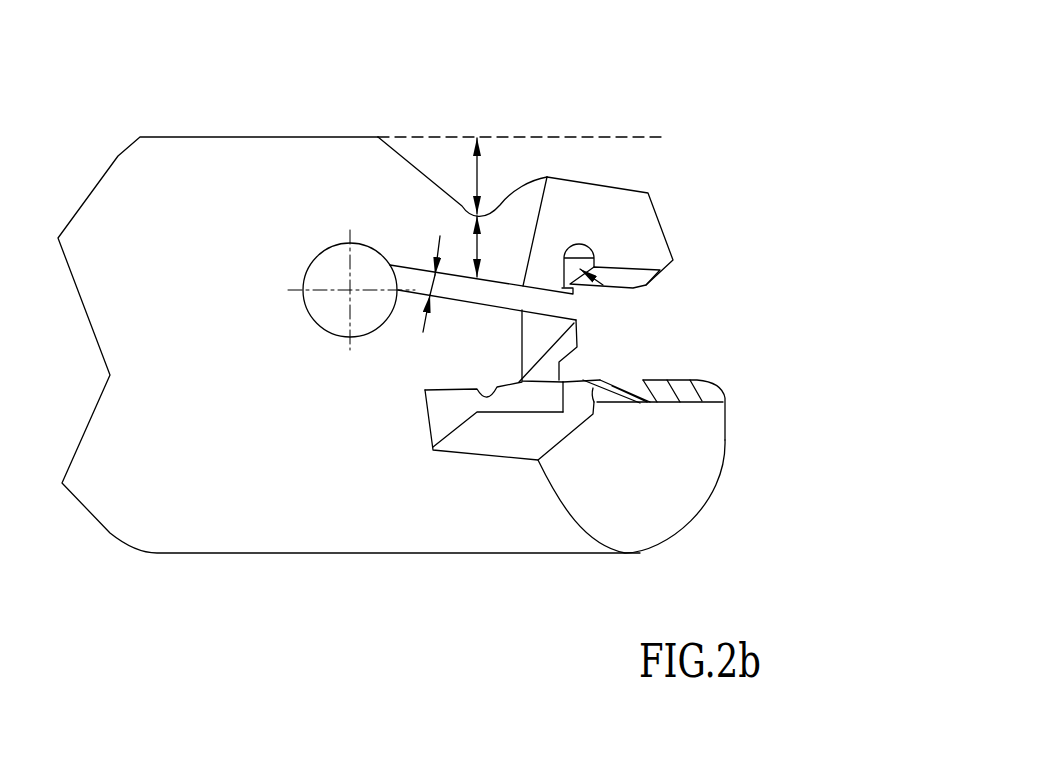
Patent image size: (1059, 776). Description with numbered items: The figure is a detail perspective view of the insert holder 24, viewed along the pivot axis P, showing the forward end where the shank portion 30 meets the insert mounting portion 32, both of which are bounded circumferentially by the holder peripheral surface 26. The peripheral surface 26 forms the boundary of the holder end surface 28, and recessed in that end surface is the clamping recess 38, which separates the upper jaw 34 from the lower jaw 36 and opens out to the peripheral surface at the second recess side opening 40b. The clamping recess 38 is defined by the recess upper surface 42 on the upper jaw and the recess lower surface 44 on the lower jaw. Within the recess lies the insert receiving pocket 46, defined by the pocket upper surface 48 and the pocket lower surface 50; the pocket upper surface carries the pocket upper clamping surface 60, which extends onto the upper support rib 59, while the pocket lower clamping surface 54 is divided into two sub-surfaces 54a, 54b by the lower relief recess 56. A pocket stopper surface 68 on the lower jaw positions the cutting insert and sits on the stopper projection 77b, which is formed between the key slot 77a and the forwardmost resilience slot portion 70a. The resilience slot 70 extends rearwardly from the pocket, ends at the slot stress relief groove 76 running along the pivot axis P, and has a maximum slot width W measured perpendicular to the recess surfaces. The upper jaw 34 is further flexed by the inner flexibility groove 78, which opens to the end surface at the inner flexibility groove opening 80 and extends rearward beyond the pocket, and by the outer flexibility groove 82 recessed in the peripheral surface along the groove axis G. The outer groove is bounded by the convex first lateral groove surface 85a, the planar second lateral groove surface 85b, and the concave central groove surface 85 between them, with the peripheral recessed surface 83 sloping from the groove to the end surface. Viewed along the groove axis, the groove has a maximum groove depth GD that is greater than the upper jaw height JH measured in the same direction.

The insert holder 24 is at (643, 63).
The holder peripheral surface 26 is at (227, 170).
The holder end surface 28 is at (644, 228).
The shank portion 30 is at (228, 522).
The insert mounting portion 32 is at (711, 531).
The upper jaw 34 is at (606, 204).
The lower jaw 36 is at (679, 478).
The clamping recess 38 is at (392, 272).
The second recess side opening 40b is at (462, 296).
The recess upper surface 42 is at (408, 292).
The recess lower surface 44 is at (459, 277).
The insert receiving pocket 46 is at (694, 343).
The pocket upper surface 48 is at (623, 278).
The pocket lower surface 50 is at (650, 395).
The pocket lower clamping surface 54 is at (703, 393).
The pocket lower clamping sub-surface 54a is at (642, 391).
The pocket lower clamping sub-surface 54b is at (593, 388).
The lower relief recess 56 is at (657, 404).
The upper support rib 59 is at (687, 242).
The pocket upper clamping surface 60 is at (637, 287).
The pocket stopper surface 68 is at (577, 330).
The resilience slot 70 is at (476, 295).
The forwardmost resilience slot portion 70a is at (556, 305).
The slot stress relief groove 76 is at (333, 273).
The key slot 77a is at (535, 438).
The stopper projection 77b is at (541, 339).
The inner flexibility groove 78 is at (603, 285).
The inner flexibility groove opening 80 is at (587, 248).
The outer flexibility groove 82 is at (475, 108).
The peripheral recessed surface 83 is at (593, 181).
The central groove surface 85 is at (492, 199).
The first lateral groove surface 85a is at (544, 173).
The second lateral groove surface 85b is at (409, 151).
The groove axis G is at (477, 178).
The maximum groove depth GD is at (484, 162).
The upper jaw height JH is at (484, 241).
The maximum slot width W is at (432, 275).
The pivot axis P is at (347, 293).